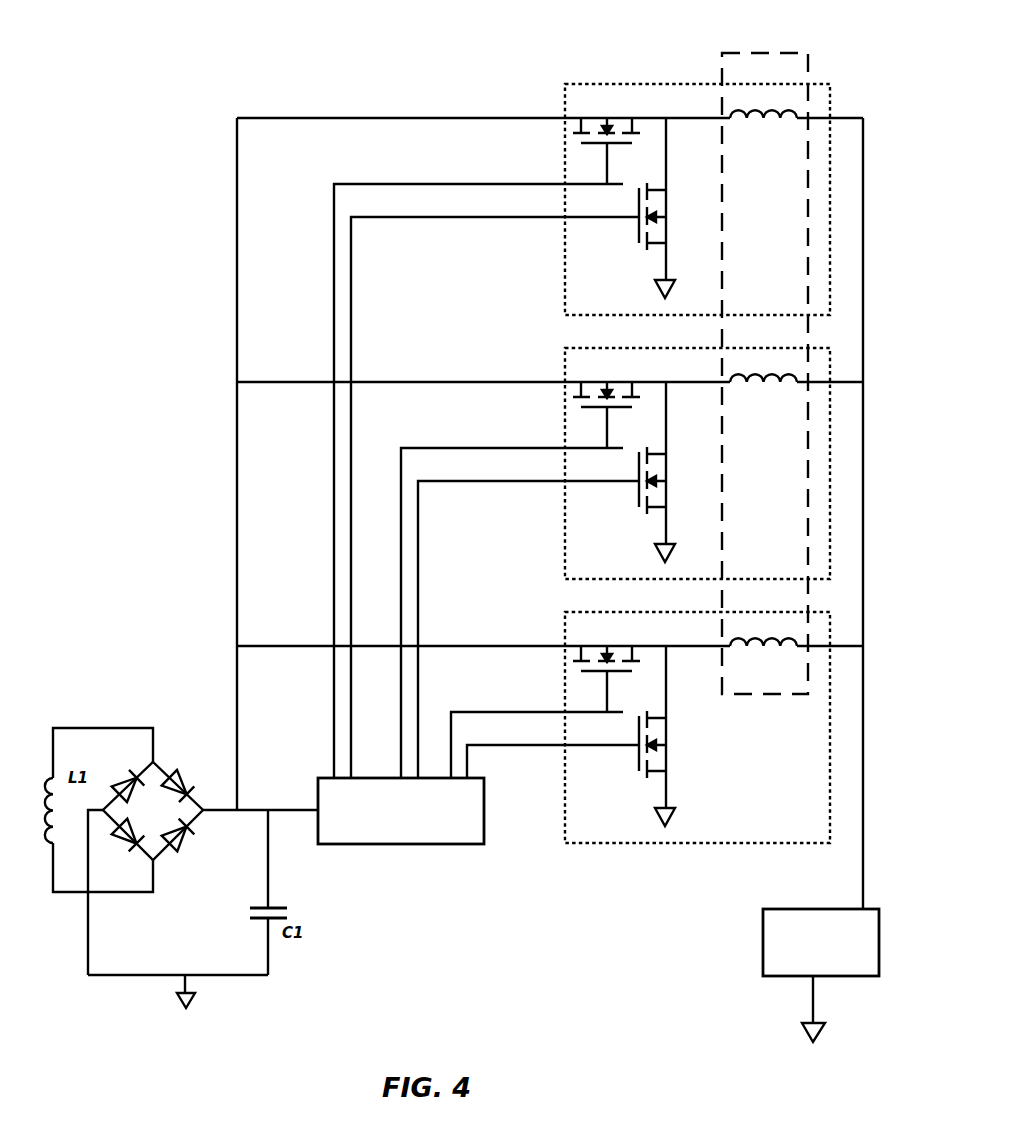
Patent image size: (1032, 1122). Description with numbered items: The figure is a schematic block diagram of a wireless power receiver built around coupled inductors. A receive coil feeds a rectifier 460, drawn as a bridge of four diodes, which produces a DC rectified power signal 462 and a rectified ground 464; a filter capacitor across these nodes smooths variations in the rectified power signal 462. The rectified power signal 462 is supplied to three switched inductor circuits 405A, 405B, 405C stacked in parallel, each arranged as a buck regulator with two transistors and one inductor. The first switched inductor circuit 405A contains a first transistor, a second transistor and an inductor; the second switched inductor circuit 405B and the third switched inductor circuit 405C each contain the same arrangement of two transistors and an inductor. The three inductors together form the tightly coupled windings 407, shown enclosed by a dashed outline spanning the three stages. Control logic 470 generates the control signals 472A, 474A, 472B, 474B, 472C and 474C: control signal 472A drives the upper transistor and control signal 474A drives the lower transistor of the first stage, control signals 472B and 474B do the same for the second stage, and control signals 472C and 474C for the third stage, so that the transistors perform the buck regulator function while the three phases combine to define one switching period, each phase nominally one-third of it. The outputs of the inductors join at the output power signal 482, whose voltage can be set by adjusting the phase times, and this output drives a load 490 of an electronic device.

The tightly coupled windings 407 is at (752, 52).
The first switched inductor circuit 405A is at (565, 92).
The second switched inductor circuit 405B is at (657, 463).
The third switched inductor circuit 405C is at (657, 727).
The control signal 472A is at (522, 182).
The control signal 474A is at (521, 221).
The control signal 472B is at (522, 446).
The control signal 474B is at (521, 485).
The control signal 472C is at (522, 710).
The control signal 474C is at (521, 749).
The control logic 470 is at (430, 847).
The rectifier 460 is at (178, 872).
The DC rectified power signal 462 is at (286, 808).
The rectified ground 464 is at (250, 975).
The output power signal 482 is at (863, 886).
The load 490 is at (781, 976).